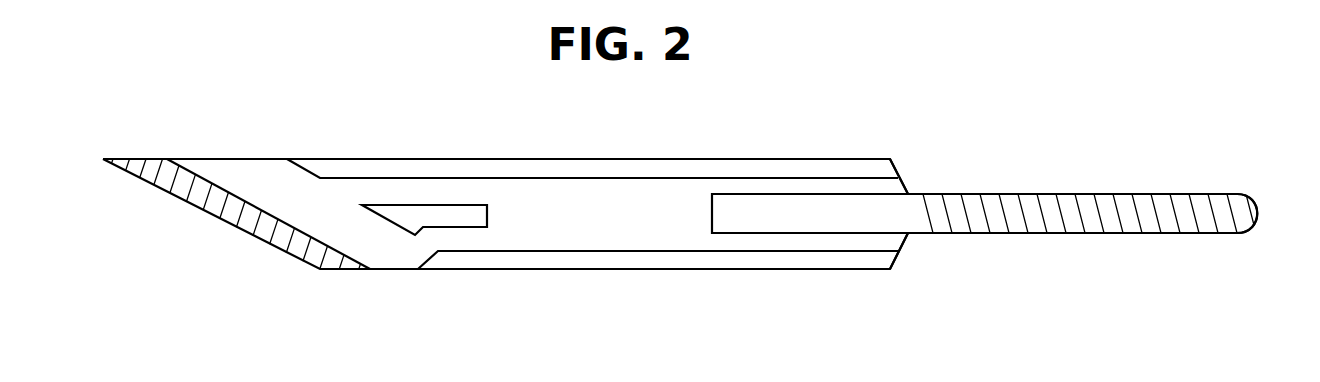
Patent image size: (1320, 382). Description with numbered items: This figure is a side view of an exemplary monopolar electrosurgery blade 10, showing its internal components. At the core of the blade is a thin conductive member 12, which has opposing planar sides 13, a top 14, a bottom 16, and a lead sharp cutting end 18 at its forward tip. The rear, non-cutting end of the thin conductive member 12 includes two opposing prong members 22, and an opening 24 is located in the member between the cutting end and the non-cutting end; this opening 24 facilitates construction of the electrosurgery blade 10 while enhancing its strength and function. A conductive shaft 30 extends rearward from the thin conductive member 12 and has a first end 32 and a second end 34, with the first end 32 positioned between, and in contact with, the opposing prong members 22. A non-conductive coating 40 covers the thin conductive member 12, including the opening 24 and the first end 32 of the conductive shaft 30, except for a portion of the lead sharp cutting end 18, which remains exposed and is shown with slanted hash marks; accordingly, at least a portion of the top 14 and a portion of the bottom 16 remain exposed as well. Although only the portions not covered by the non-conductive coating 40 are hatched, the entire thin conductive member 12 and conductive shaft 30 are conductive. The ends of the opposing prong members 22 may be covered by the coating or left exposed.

The monopolar electrosurgery blade 10 is at (757, 102).
The thin conductive member 12 is at (573, 230).
The opposing planar sides 13 is at (622, 224).
The top 14 is at (147, 157).
The bottom 16 is at (338, 271).
The lead sharp cutting end 18 is at (218, 218).
The opposing prong members 22 is at (908, 187).
The opening 24 is at (417, 211).
The conductive shaft 30 is at (1037, 203).
The first end 32 is at (710, 212).
The second end 34 is at (1256, 218).
The non-conductive coating 40 is at (358, 167).